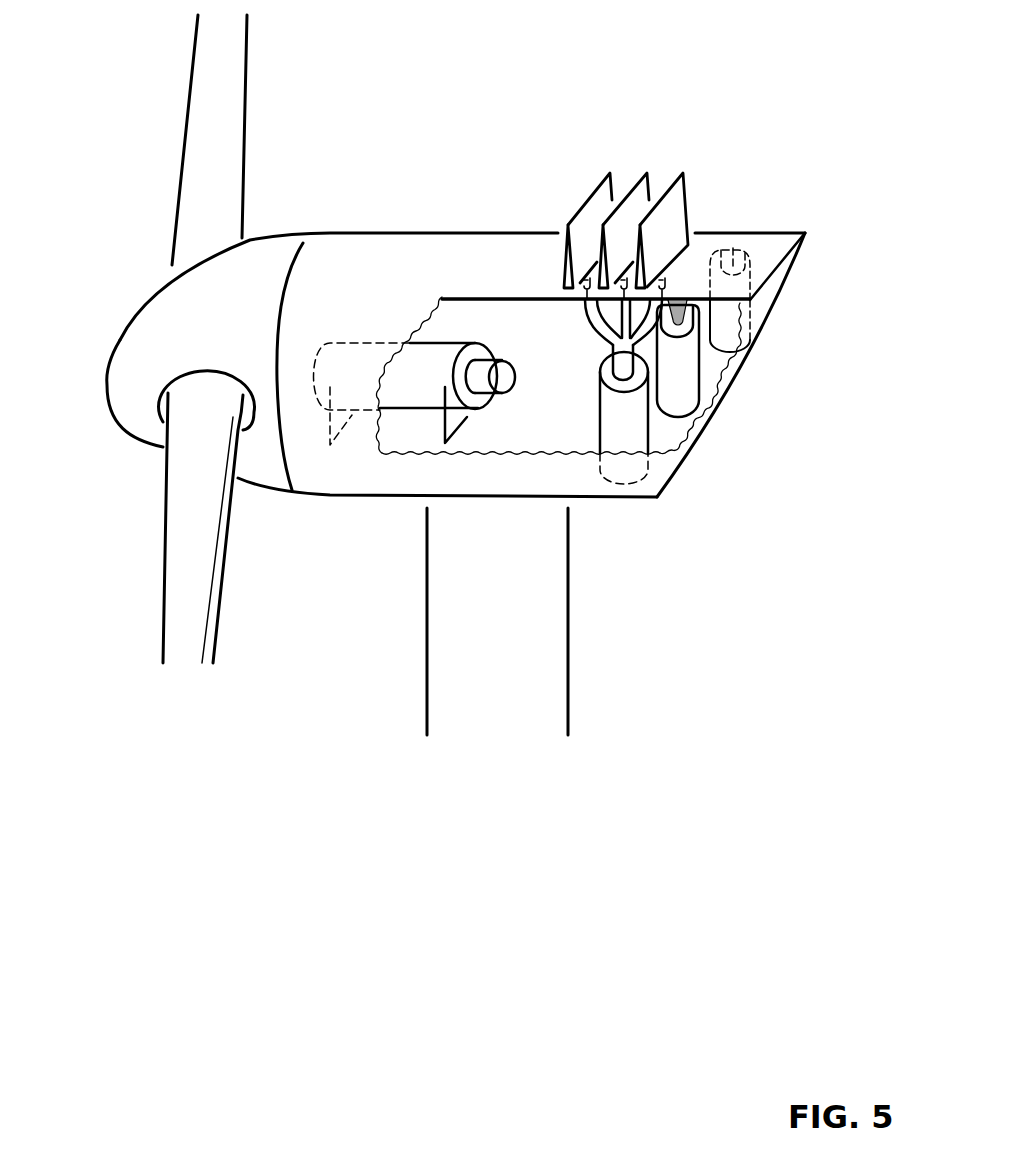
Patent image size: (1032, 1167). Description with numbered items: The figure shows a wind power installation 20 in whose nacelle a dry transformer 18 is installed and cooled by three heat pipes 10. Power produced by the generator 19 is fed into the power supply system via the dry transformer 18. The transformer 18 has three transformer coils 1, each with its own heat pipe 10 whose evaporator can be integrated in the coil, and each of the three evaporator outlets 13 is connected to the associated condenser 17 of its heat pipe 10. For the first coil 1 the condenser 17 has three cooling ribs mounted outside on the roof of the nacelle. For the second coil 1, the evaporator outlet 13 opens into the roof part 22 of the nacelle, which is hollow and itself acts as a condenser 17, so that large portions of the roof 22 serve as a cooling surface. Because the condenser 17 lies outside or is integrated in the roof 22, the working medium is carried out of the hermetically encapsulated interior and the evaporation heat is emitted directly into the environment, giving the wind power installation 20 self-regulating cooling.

The transformer coil 1 is at (637, 447).
The heat pipe 10 is at (582, 312).
The evaporator outlet 13 is at (630, 357).
The condenser 17 is at (682, 205).
The dry transformer 18 is at (718, 381).
The generator 19 is at (408, 402).
The wind power installation 20 is at (133, 265).
The roof part 22 is at (345, 245).